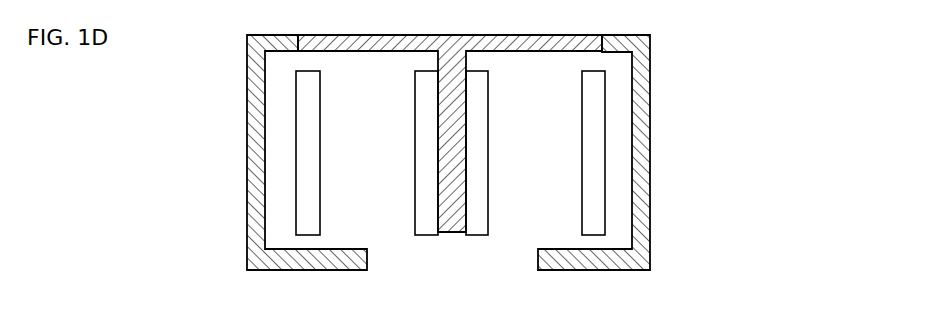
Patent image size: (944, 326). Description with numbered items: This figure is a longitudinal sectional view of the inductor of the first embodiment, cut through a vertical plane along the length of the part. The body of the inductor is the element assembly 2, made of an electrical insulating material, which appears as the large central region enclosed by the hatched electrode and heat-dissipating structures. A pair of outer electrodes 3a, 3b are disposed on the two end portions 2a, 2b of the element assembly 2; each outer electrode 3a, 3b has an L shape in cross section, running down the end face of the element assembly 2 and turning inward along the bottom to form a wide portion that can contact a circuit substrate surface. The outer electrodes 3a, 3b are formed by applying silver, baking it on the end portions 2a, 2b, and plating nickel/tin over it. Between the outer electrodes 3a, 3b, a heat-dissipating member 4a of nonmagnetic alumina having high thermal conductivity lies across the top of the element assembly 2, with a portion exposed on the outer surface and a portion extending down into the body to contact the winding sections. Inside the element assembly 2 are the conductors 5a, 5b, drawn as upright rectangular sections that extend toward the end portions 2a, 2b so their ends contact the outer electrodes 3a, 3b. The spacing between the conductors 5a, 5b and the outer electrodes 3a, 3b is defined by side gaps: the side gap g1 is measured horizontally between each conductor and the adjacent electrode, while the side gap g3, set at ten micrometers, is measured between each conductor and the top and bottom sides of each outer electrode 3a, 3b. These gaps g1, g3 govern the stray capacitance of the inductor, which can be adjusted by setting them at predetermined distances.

The element assembly 2 is at (441, 135).
The heat-dissipating member 4a is at (358, 68).
The end portion of the element assembly 2a is at (272, 152).
The end portion of the element assembly 2b is at (621, 152).
The outer electrode 3a is at (247, 113).
The outer electrode 3b is at (650, 110).
The conductor 5a is at (472, 235).
The conductor 5b is at (425, 235).
The side gap g1 is at (325, 146).
The side gap g3 is at (296, 71).